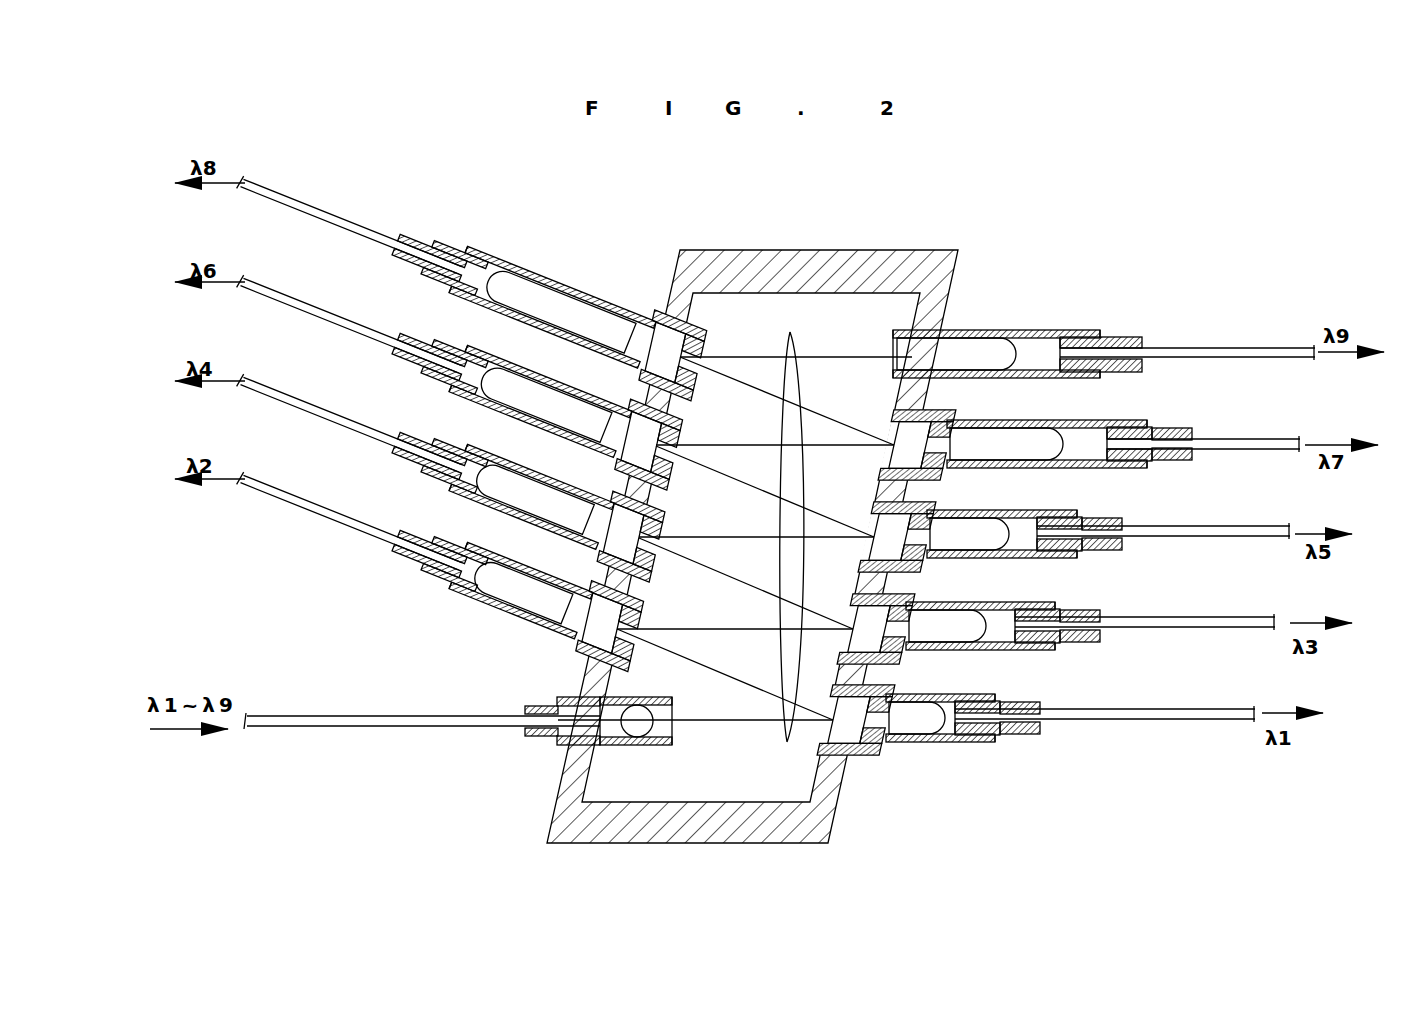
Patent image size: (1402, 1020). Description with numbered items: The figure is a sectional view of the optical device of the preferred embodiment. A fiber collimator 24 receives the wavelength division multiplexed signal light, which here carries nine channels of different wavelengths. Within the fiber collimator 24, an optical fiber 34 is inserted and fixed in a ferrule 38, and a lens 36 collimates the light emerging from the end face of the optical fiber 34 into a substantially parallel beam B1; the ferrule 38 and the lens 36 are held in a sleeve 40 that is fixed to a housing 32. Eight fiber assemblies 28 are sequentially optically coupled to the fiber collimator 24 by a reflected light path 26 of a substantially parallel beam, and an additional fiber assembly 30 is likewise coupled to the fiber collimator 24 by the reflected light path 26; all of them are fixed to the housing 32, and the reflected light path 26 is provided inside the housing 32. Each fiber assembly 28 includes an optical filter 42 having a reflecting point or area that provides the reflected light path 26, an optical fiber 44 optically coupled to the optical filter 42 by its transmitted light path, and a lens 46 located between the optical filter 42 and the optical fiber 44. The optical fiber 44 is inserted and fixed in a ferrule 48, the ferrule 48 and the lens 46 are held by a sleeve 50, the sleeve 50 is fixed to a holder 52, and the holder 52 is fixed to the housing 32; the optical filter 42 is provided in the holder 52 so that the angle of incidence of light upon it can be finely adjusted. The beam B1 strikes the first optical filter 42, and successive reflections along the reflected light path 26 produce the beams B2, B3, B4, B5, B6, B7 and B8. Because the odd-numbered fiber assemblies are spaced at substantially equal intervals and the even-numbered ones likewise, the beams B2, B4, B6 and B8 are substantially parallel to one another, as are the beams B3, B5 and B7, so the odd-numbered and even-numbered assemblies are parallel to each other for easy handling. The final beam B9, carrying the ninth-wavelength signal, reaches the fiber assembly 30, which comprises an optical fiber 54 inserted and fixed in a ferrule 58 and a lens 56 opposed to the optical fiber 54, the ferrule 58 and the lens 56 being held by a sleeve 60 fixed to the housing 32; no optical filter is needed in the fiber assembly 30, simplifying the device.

The fiber collimator 24 is at (488, 751).
The reflected light path 26 is at (788, 346).
The fiber assemblies 28 is at (771, 486).
The additional fiber assembly 30 is at (1104, 323).
The housing 32 is at (698, 843).
The optical fiber 34 is at (353, 731).
The lens 36 is at (672, 730).
The ferrule 38 is at (550, 745).
The sleeve 40 is at (604, 745).
The optical filter 42 is at (690, 330).
The optical fiber 44 is at (290, 208).
The lens 46 is at (512, 270).
The ferrule 48 is at (415, 238).
The sleeve 50 is at (470, 245).
The holder 52 is at (652, 316).
The optical fiber 54 is at (1233, 345).
The lens 56 is at (983, 330).
The ferrule 58 is at (1128, 338).
The sleeve 60 is at (1023, 330).
The beam B1 is at (778, 730).
The beam B2 is at (735, 668).
The beam B3 is at (740, 628).
The beam B4 is at (690, 552).
The beam B5 is at (756, 559).
The beam B6 is at (720, 462).
The beam B7 is at (740, 440).
The beam B8 is at (785, 395).
The beam B9 is at (808, 350).